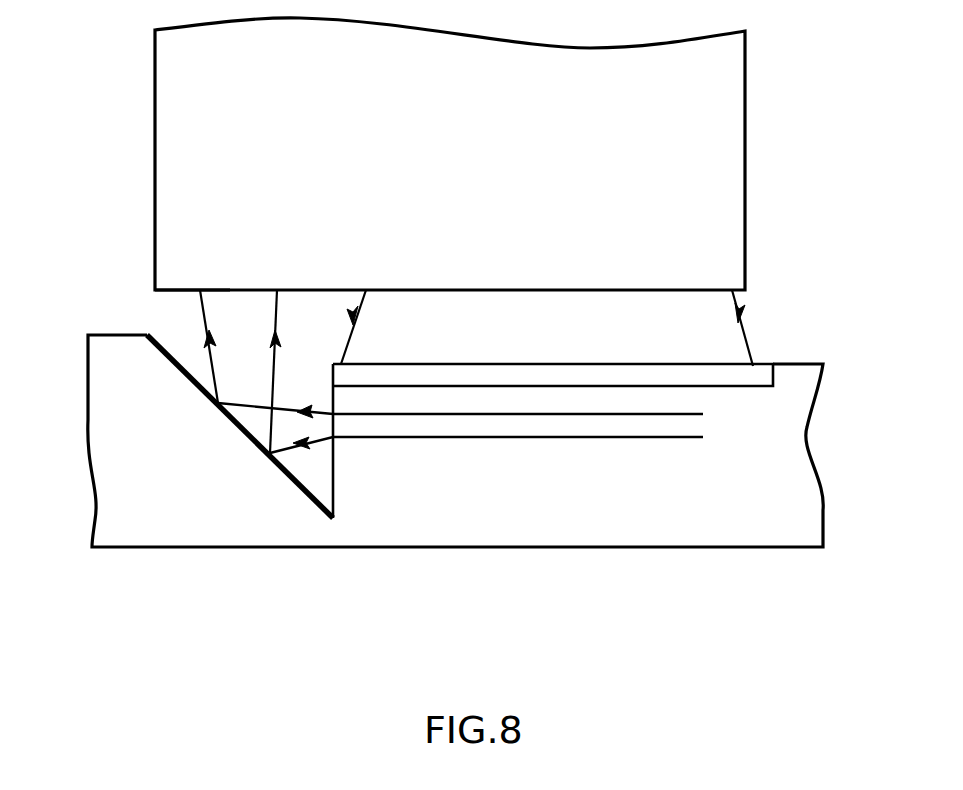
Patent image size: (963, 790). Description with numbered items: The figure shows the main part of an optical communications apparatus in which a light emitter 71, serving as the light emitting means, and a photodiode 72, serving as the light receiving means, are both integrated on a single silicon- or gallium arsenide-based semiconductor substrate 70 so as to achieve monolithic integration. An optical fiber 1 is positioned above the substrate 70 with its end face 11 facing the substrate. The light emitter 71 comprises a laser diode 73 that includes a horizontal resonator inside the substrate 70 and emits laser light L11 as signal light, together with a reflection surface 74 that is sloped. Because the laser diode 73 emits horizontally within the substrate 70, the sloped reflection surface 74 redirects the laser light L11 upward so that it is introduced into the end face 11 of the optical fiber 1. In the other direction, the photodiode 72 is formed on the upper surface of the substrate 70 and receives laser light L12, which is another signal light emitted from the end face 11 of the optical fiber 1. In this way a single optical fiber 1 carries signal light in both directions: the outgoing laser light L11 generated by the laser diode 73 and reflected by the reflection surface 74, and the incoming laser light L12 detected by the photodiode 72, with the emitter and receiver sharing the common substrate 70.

The optical fiber 1 is at (739, 113).
The end face of the optical fiber 11 is at (172, 293).
The semiconductor substrate 70 is at (742, 540).
The light emitter 71 is at (470, 610).
The photodiode 72 is at (752, 366).
The laser diode 73 is at (463, 438).
The reflection surface 74 is at (278, 472).
The laser light L11 is at (205, 323).
The laser light L12 is at (742, 304).